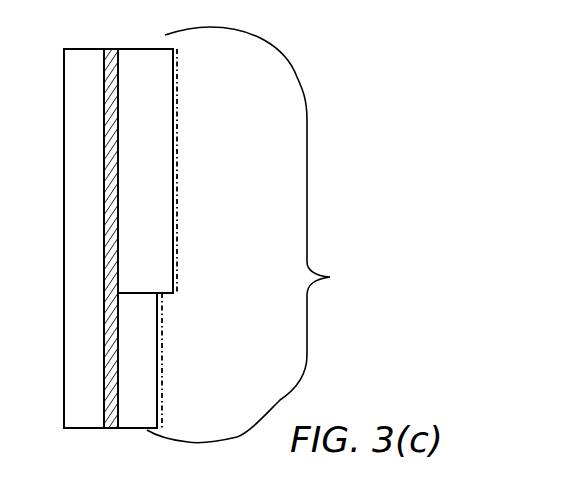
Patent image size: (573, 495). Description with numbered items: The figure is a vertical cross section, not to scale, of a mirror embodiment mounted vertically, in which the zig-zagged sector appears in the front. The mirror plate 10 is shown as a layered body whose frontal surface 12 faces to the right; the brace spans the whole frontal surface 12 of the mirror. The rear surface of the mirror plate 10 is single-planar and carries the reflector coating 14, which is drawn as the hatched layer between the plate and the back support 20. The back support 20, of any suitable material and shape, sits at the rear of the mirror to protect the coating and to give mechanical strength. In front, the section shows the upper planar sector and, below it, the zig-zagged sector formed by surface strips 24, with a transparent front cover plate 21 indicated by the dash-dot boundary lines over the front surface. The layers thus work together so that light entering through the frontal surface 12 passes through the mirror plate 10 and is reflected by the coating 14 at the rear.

The mirror plate 10 is at (145, 238).
The frontal surface 12 is at (270, 235).
The reflector coating 14 is at (113, 173).
The back support 20 is at (78, 238).
The transparent front cover plate 21 is at (178, 252).
The surface strip 24 is at (158, 340).